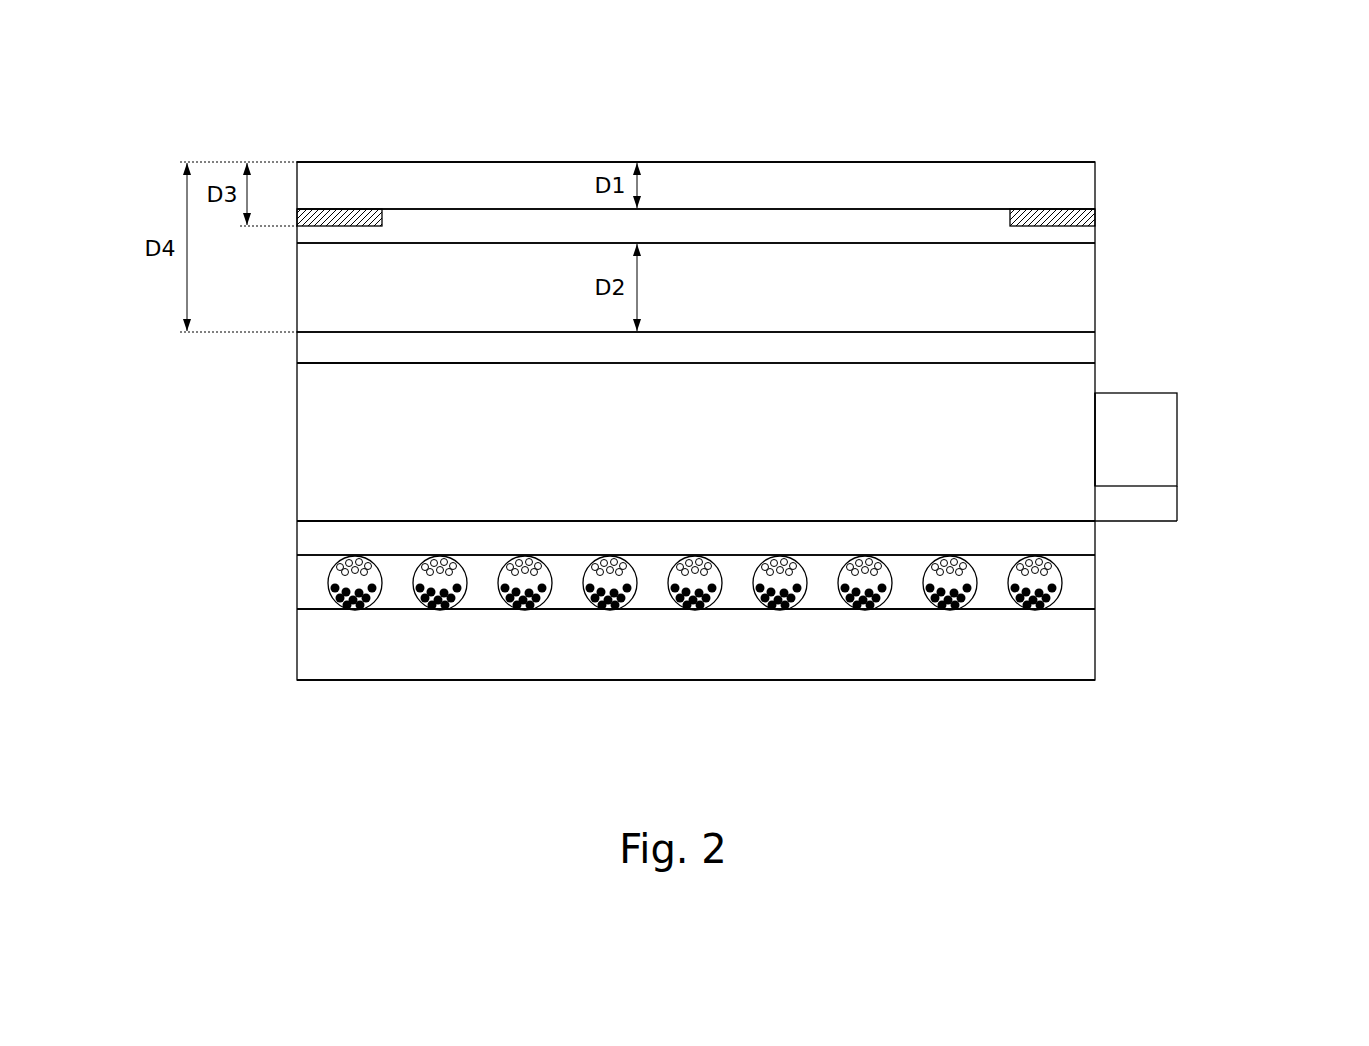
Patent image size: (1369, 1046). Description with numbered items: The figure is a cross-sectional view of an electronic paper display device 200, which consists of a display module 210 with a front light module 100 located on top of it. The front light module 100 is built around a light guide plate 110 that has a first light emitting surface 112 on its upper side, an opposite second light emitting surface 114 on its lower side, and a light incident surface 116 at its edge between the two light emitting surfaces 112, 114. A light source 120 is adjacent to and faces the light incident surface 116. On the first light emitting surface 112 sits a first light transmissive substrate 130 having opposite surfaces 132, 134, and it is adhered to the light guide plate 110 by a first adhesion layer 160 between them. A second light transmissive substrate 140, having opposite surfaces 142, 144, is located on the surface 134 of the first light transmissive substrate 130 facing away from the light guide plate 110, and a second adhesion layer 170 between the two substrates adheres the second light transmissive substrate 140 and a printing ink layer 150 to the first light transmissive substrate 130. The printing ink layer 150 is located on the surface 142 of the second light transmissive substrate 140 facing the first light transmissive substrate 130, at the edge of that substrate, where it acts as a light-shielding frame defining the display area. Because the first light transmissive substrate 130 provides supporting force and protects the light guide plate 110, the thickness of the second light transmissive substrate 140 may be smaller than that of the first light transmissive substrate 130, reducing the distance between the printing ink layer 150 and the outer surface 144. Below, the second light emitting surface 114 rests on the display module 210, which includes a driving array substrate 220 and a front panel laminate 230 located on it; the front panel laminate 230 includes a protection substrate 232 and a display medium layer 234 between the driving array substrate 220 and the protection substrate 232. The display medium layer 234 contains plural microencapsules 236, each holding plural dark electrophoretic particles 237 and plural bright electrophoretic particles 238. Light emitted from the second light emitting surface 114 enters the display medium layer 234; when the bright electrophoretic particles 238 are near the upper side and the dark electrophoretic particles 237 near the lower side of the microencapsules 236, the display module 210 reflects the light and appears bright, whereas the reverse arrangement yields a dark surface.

The electronic paper display device 200 is at (70, 98).
The front light module 100 is at (1296, 165).
The light guide plate 110 is at (1080, 373).
The first light emitting surface 112 is at (333, 366).
The second light emitting surface 114 is at (340, 518).
The light incident surface 116 is at (1101, 452).
The light source 120 is at (1160, 440).
The first light transmissive substrate 130 is at (1080, 282).
The surface 132 is at (818, 330).
The surface 134 is at (730, 242).
The second light transmissive substrate 140 is at (1080, 188).
The surface 142 is at (972, 208).
The surface 144 is at (912, 160).
The printing ink layer 150 is at (1090, 220).
The first adhesion layer 160 is at (422, 348).
The second adhesion layer 170 is at (517, 225).
The display module 210 is at (118, 555).
The driving array substrate 220 is at (310, 645).
The front panel laminate 230 is at (193, 528).
The protection substrate 232 is at (303, 535).
The display medium layer 234 is at (303, 585).
The microencapsule 236 is at (463, 572).
The dark electrophoretic particle 237 is at (439, 603).
The bright electrophoretic particle 238 is at (418, 562).